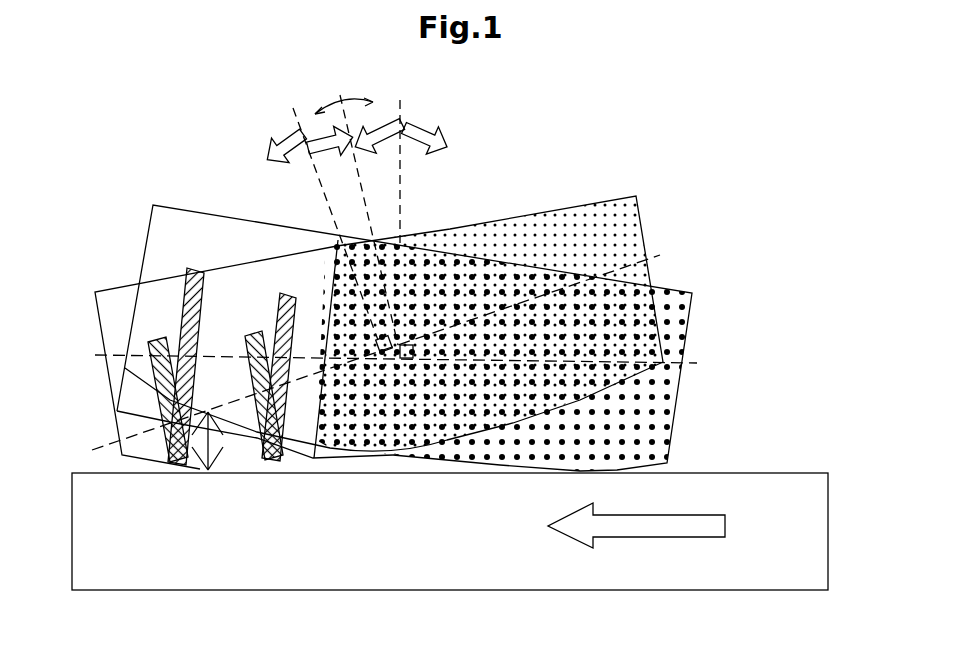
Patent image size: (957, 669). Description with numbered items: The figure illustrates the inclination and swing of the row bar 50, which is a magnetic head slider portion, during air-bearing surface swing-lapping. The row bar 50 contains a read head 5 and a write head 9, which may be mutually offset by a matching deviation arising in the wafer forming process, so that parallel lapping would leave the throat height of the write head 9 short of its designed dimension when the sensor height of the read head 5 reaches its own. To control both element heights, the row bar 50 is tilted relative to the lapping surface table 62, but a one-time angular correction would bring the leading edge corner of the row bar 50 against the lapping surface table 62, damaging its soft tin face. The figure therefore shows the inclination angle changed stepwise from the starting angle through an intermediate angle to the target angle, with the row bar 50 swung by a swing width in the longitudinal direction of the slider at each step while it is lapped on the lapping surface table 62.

The read head 5 is at (183, 303).
The write head 9 is at (278, 307).
The row bar 50 is at (637, 197).
The lapping surface table 62 is at (713, 490).